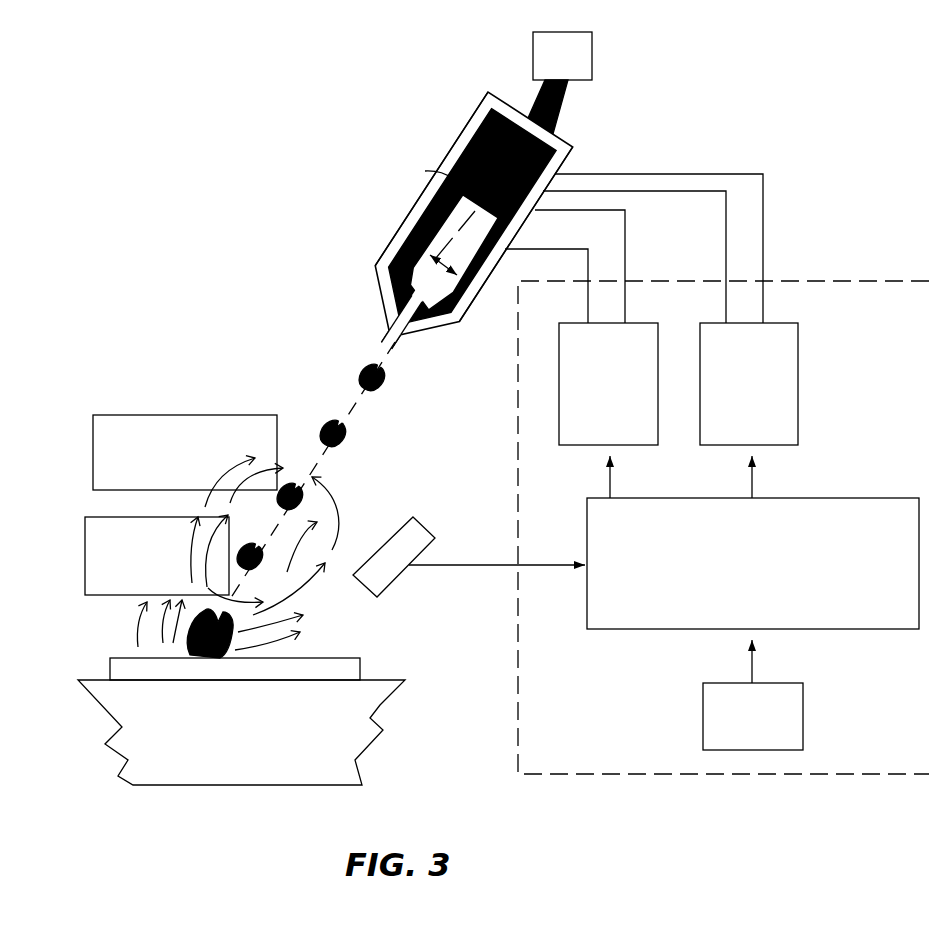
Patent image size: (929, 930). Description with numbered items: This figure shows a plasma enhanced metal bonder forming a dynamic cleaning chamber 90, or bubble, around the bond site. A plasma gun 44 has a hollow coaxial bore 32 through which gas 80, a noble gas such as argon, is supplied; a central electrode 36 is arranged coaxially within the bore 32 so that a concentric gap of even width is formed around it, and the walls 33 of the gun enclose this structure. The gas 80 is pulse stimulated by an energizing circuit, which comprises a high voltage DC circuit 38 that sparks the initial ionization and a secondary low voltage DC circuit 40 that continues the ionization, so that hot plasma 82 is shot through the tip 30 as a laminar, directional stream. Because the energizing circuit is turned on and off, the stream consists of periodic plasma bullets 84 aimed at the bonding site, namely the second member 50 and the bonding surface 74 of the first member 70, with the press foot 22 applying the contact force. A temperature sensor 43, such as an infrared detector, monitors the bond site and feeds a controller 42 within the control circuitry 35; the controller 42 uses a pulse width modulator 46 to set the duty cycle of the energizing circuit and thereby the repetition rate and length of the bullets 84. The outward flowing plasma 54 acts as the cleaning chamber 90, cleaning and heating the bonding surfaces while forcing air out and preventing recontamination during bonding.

The press foot 22 is at (230, 448).
The tip 30 is at (383, 332).
The hollow coaxial bore 32 is at (469, 163).
The nozzle housing wall 33 is at (397, 255).
The control circuit 35 is at (872, 278).
The central electrode 36 is at (436, 215).
The high voltage DC circuit 38 is at (598, 393).
The secondary low voltage DC circuit 40 is at (738, 393).
The controller 42 is at (742, 588).
The temperature sensor 43 is at (426, 520).
The plasma gun 44 is at (452, 100).
The pulse width modulator 46 is at (553, 68).
The second member 50 is at (156, 538).
The plume flow arrows 54 is at (290, 584).
The first member 70 is at (395, 672).
The bonding surface 74 is at (362, 660).
The gas 80 is at (510, 100).
The hot plasma 82 is at (382, 347).
The plasma bullets 84 is at (345, 448).
The dynamic cleaning chamber 90 is at (343, 522).